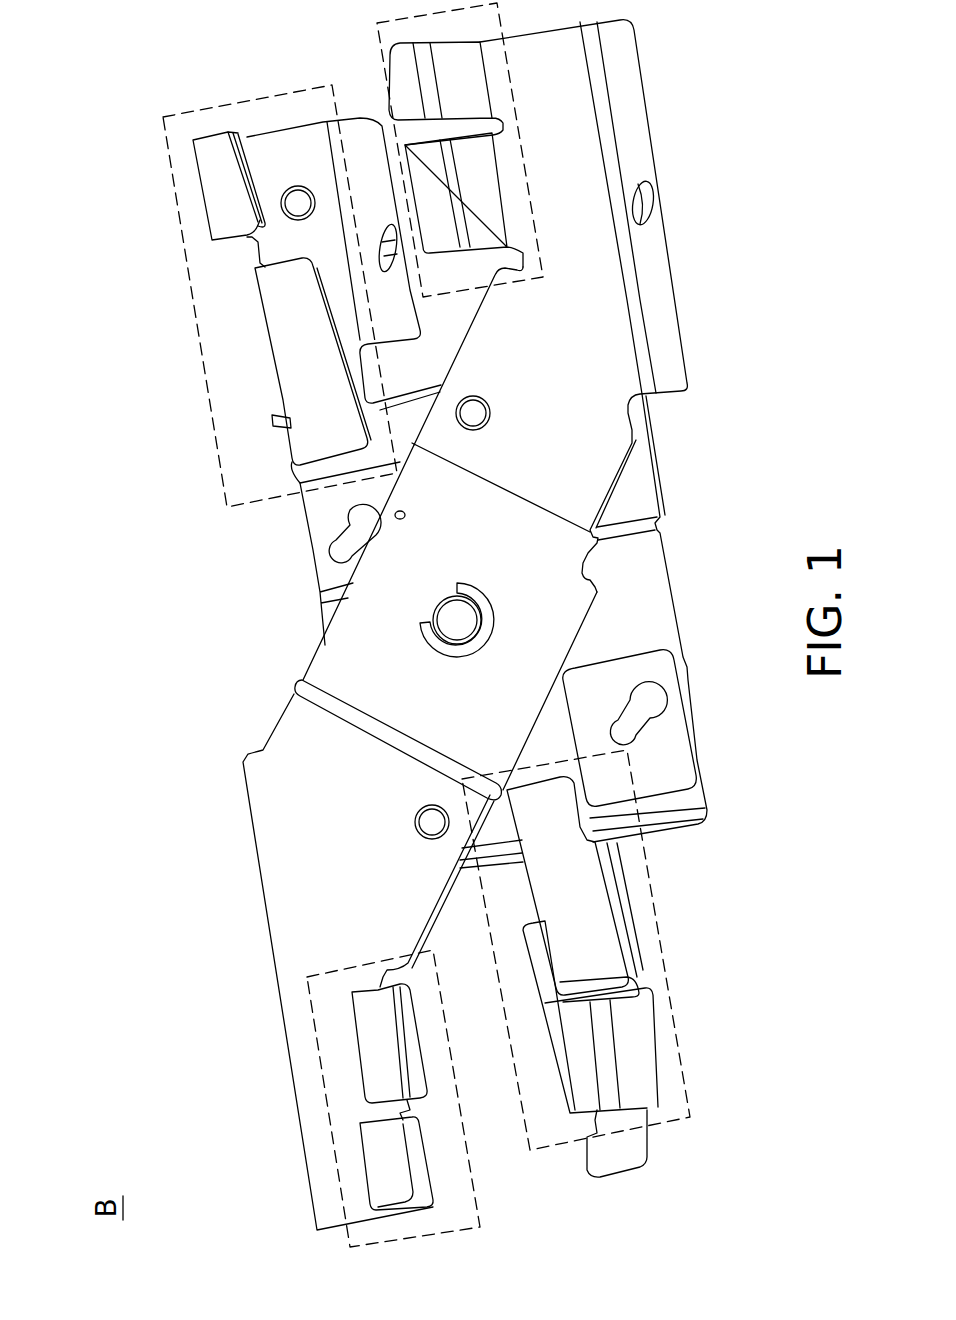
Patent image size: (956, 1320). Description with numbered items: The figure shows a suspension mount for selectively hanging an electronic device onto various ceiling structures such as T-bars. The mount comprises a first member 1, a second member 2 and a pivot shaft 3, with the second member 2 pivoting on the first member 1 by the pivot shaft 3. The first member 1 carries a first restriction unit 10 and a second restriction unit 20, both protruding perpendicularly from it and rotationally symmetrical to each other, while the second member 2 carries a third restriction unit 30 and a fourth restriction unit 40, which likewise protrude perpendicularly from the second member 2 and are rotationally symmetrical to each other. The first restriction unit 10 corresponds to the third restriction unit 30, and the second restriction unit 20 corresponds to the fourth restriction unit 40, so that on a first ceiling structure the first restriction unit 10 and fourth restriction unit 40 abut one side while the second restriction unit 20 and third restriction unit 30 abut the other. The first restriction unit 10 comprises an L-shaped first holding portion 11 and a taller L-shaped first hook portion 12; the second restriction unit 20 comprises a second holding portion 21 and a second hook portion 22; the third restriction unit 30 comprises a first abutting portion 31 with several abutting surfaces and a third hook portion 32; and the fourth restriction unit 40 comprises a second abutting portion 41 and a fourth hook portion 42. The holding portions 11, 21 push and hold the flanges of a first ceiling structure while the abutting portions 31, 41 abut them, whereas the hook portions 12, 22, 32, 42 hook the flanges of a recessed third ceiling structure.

The first member 1 is at (628, 607).
The second member 2 is at (300, 882).
The pivot shaft 3 is at (450, 613).
The first restriction unit 10 is at (188, 275).
The first holding portion 11 is at (293, 325).
The first hook portion 12 is at (220, 187).
The second restriction unit 20 is at (665, 967).
The second holding portion 21 is at (573, 897).
The second hook portion 22 is at (573, 1057).
The third restriction unit 30 is at (513, 90).
The first abutting portion 31 is at (430, 182).
The third hook portion 32 is at (403, 67).
The fourth restriction unit 40 is at (330, 1118).
The second abutting portion 41 is at (400, 1040).
The fourth hook portion 42 is at (387, 1167).